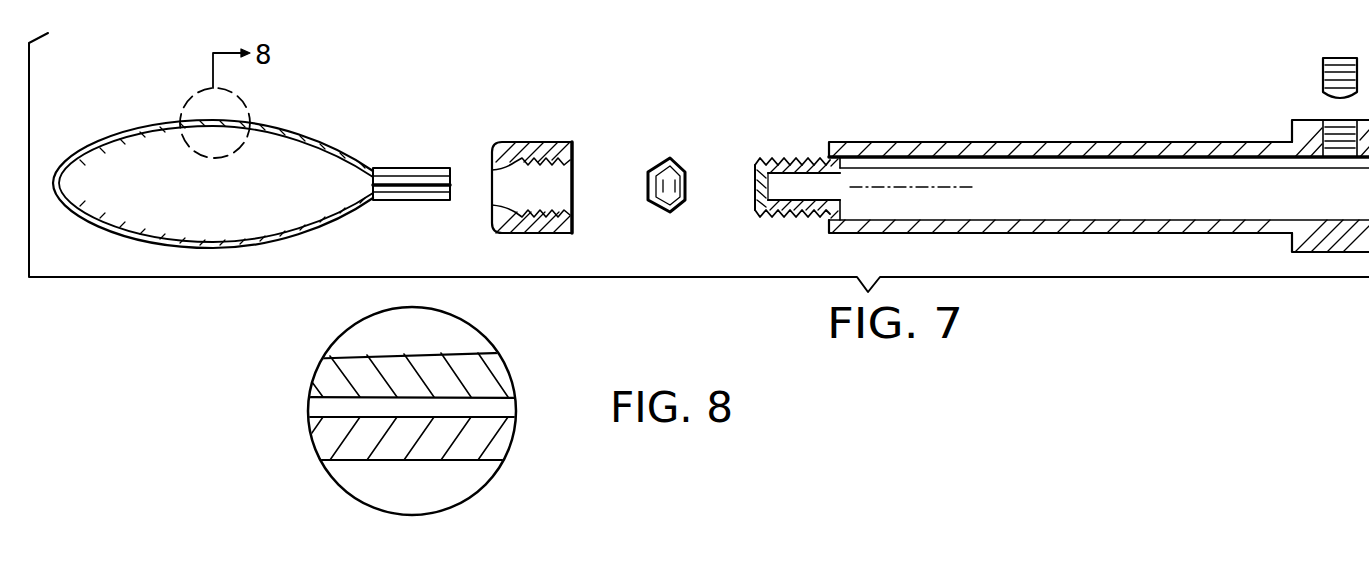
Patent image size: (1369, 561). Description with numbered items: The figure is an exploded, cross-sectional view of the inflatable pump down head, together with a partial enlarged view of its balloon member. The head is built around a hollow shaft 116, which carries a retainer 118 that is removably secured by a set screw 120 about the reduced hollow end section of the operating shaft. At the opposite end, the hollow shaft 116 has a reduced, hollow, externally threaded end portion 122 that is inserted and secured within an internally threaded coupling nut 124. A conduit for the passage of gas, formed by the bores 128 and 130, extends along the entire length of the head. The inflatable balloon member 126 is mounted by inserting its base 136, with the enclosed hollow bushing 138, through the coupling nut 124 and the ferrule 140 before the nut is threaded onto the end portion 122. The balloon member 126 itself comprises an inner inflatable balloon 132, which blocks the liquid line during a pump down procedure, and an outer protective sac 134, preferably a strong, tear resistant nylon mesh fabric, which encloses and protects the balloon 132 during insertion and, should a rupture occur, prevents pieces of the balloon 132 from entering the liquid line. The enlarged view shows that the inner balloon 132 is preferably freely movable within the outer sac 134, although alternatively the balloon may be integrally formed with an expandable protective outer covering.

In FIG. 7, the hollow shaft 116 is at (938, 143).
In FIG. 7, the retainer 118 is at (1350, 233).
In FIG. 7, the set screw 120 is at (1320, 78).
In FIG. 7, the reduced, hollow, externally threaded end portion 122 is at (800, 157).
In FIG. 7, the coupling nut 124 is at (505, 153).
In FIG. 7, the inflatable balloon member 126 is at (297, 109).
In FIG. 7, the bore 128 is at (1033, 203).
In FIG. 7, the bore 130 is at (787, 183).
In FIG. 7, the inner inflatable balloon 132 is at (333, 153).
In FIG. 8, the inner inflatable balloon 132 is at (475, 445).
In FIG. 7, the outer protective sac 134 is at (340, 148).
In FIG. 8, the outer protective sac 134 is at (486, 378).
In FIG. 7, the base 136 is at (423, 203).
In FIG. 7, the hollow bushing 138 is at (397, 182).
In FIG. 7, the ferrule 140 is at (655, 168).